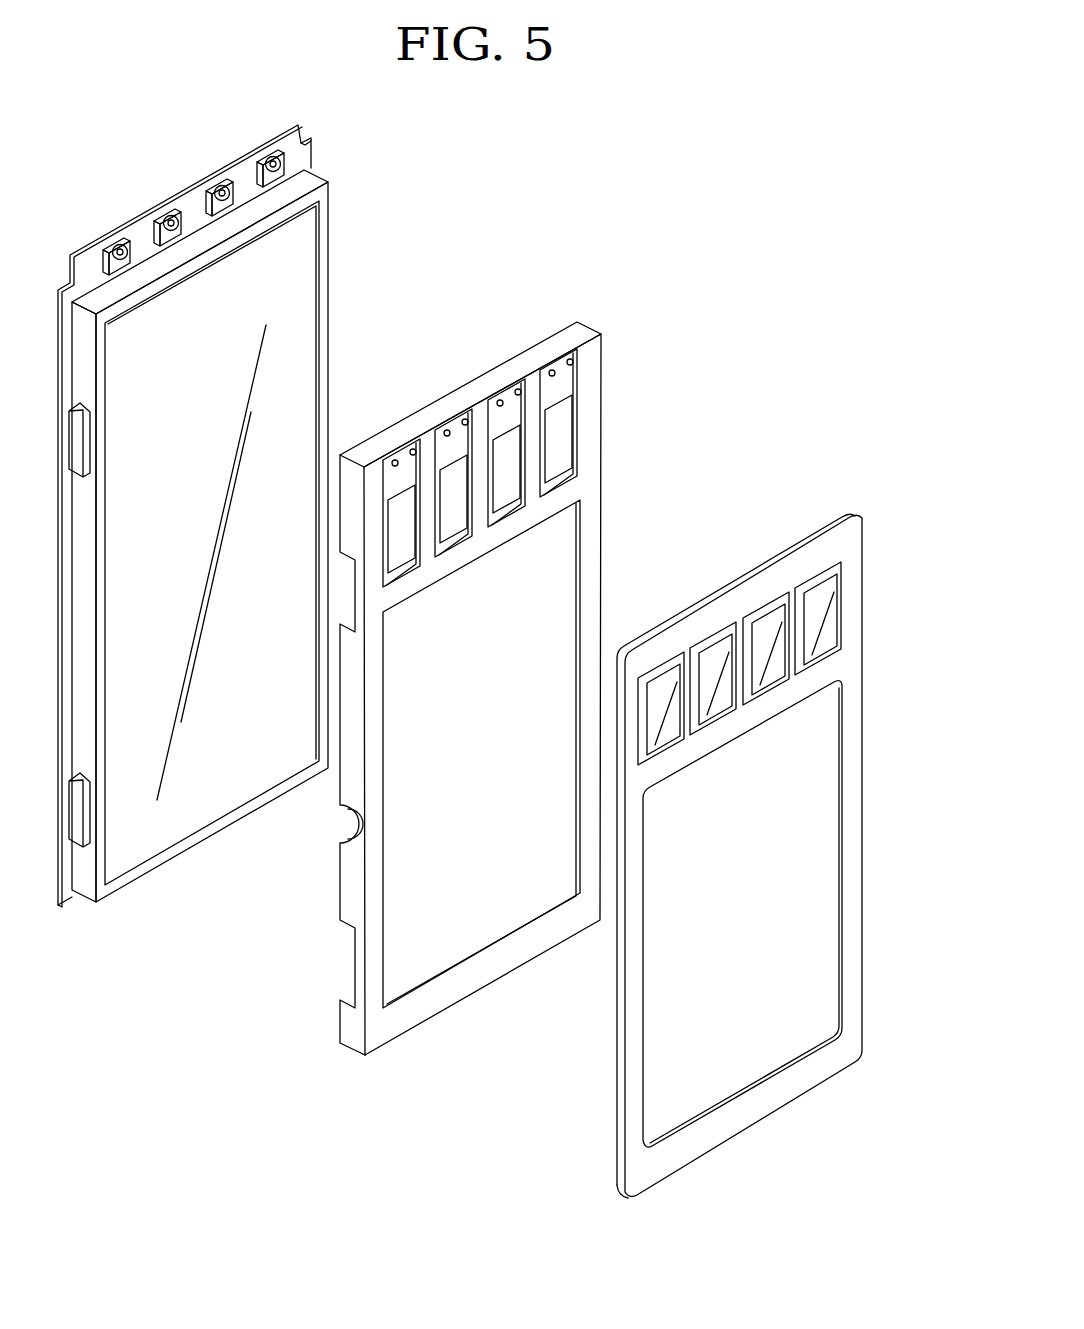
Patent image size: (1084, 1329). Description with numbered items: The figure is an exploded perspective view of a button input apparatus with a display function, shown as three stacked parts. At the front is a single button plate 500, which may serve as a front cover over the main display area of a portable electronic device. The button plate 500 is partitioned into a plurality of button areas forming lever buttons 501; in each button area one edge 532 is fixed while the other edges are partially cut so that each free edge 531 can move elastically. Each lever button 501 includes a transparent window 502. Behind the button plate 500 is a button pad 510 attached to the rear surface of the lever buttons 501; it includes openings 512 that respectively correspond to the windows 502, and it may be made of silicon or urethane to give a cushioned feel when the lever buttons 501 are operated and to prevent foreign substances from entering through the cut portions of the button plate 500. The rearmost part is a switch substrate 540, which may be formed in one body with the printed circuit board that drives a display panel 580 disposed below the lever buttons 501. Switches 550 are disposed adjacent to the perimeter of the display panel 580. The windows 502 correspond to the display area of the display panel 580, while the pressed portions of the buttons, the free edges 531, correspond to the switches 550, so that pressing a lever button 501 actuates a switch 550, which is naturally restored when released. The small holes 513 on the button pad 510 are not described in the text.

The button plate 500 is at (817, 507).
The lever button 501 is at (658, 668).
The transparent window 502 is at (775, 617).
The free edge 531 is at (727, 618).
The fixed edge 532 is at (827, 669).
The button pad 510 is at (617, 343).
The opening 512 is at (563, 450).
The hole 513 is at (563, 382).
The switch substrate 540 is at (347, 183).
The switch 550 is at (133, 257).
The display panel 580 is at (297, 343).